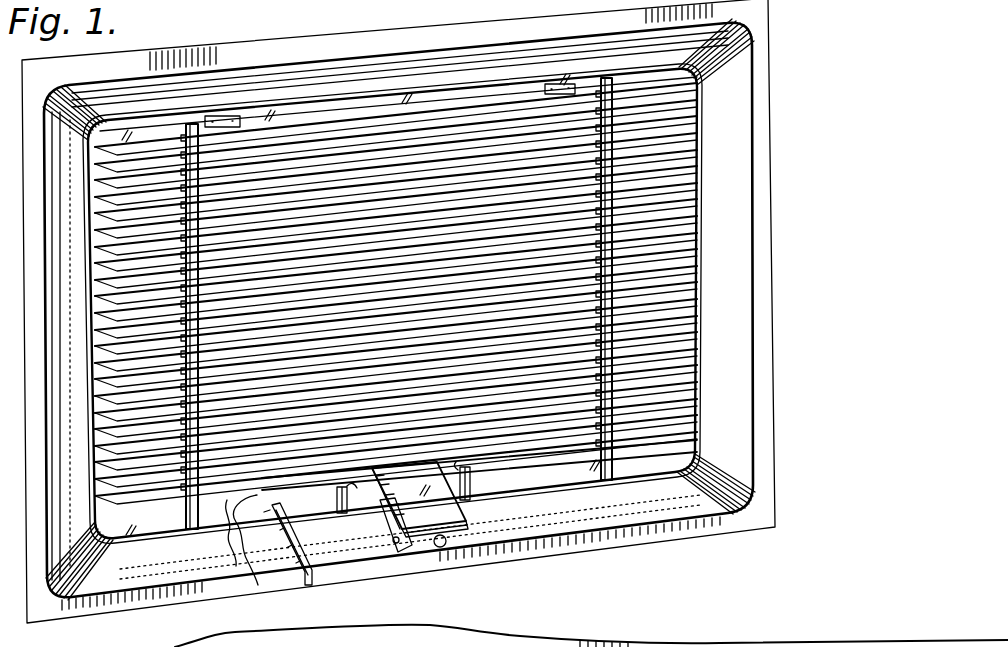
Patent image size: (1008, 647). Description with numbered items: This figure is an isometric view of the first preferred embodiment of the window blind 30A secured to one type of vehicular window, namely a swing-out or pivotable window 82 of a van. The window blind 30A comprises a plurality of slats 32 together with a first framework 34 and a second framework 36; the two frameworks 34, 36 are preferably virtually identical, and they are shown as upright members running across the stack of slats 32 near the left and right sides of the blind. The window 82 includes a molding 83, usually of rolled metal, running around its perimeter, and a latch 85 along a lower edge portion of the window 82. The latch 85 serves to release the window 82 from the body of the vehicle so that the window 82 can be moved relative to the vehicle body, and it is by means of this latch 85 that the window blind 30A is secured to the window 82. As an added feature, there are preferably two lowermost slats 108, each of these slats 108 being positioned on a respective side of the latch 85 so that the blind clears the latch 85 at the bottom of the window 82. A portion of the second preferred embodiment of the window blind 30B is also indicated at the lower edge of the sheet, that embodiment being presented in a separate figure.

The window blind 30A is at (716, 214).
The window blind 30B is at (545, 646).
The slats 32 is at (692, 400).
The first framework 34 is at (172, 514).
The second framework 36 is at (584, 468).
The window 82 is at (358, 497).
The molding 83 is at (379, 507).
The latch 85 is at (437, 512).
The lowermost slats 108 is at (679, 462).